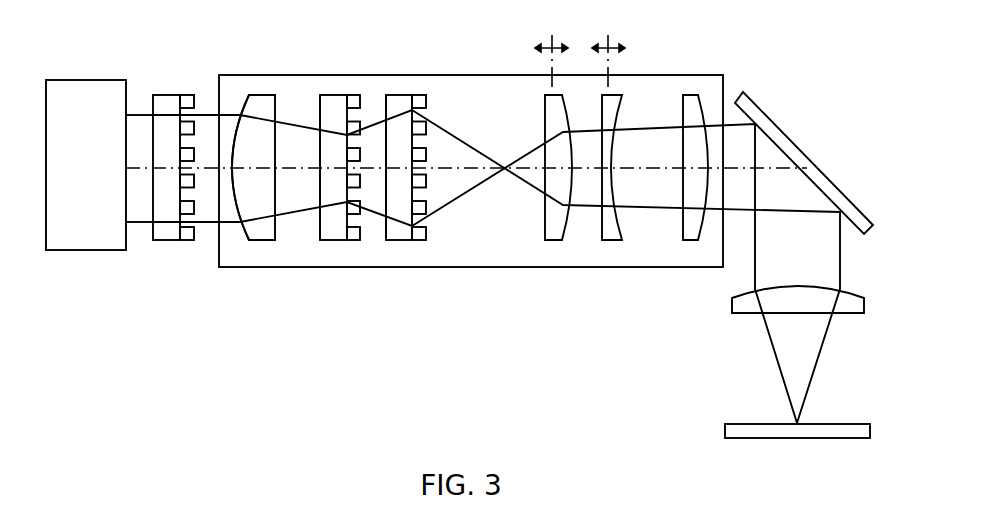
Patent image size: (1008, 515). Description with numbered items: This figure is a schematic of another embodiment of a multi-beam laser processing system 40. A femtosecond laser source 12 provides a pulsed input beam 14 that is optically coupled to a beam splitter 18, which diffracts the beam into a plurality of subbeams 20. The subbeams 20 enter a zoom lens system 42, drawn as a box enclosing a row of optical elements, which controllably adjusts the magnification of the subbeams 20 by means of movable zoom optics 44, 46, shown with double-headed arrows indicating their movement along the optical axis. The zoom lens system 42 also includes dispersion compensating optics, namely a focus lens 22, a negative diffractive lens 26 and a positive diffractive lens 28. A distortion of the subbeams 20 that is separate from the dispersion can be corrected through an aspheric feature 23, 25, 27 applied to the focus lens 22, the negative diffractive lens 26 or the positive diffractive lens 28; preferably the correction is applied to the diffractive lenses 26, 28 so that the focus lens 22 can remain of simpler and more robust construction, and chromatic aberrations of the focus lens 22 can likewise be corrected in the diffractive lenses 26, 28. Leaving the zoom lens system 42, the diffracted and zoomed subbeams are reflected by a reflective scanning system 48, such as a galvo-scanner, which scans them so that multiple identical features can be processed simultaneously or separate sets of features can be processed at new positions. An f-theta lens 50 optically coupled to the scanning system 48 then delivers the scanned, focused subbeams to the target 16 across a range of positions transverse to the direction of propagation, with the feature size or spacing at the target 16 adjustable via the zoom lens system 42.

The femtosecond laser source 12 is at (76, 199).
The pulsed input beam 14 is at (142, 130).
The target 16 is at (755, 423).
The beam splitter 18 is at (173, 105).
The subbeams 20 is at (200, 130).
The focus lens 22 is at (265, 107).
The aspheric feature 23 is at (243, 230).
The aspheric feature 25 is at (318, 228).
The negative diffractive lens 26 is at (335, 107).
The aspheric feature 27 is at (383, 228).
The positive diffractive lens 28 is at (397, 107).
The multi-beam laser processing system 40 is at (203, 370).
The zoom lens system 42 is at (430, 75).
The movable zoom optics 44 is at (552, 110).
The movable zoom optics 46 is at (613, 110).
The reflective scanning system 48 is at (792, 157).
The f-theta lens 50 is at (742, 302).